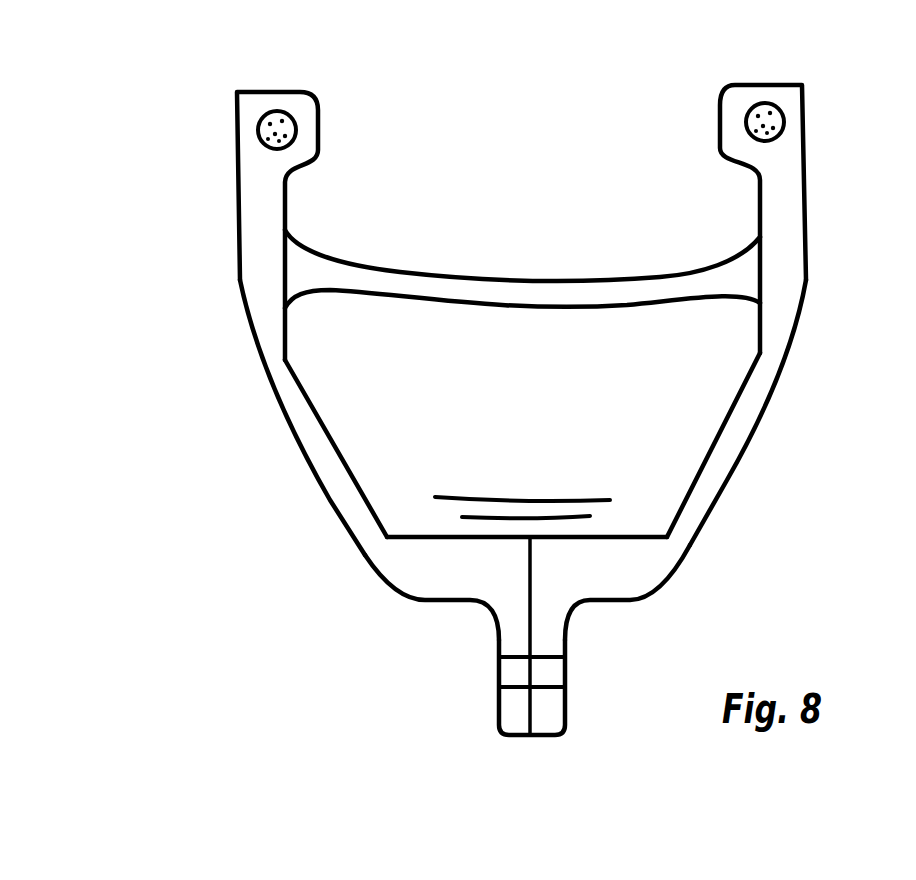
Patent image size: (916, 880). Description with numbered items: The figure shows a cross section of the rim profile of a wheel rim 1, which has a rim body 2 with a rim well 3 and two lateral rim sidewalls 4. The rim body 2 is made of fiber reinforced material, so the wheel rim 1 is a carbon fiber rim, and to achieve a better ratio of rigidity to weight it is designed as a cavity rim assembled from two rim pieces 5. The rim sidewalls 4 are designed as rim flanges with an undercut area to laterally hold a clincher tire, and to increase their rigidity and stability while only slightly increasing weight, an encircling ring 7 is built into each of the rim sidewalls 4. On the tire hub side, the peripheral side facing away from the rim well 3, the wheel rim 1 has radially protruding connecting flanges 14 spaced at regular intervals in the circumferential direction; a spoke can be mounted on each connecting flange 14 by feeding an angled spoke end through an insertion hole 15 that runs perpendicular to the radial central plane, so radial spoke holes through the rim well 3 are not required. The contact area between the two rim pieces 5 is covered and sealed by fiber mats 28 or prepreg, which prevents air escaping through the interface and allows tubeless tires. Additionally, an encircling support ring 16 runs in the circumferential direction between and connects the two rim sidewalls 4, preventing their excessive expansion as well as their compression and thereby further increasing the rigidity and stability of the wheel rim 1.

The wheel rim 1 is at (146, 104).
The rim body 2 is at (394, 610).
The rim well 3 is at (624, 522).
The rim sidewalls 4 is at (248, 206).
The rim pieces 5 is at (336, 510).
The encircling ring 7 is at (277, 110).
The connecting flanges 14 is at (510, 720).
The insertion hole 15 is at (514, 668).
The encircling support ring 16 is at (425, 280).
The fiber mats 28 is at (533, 516).